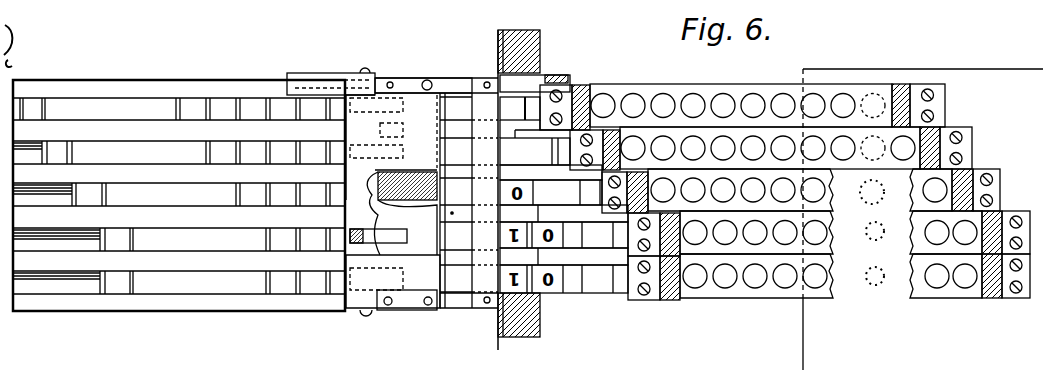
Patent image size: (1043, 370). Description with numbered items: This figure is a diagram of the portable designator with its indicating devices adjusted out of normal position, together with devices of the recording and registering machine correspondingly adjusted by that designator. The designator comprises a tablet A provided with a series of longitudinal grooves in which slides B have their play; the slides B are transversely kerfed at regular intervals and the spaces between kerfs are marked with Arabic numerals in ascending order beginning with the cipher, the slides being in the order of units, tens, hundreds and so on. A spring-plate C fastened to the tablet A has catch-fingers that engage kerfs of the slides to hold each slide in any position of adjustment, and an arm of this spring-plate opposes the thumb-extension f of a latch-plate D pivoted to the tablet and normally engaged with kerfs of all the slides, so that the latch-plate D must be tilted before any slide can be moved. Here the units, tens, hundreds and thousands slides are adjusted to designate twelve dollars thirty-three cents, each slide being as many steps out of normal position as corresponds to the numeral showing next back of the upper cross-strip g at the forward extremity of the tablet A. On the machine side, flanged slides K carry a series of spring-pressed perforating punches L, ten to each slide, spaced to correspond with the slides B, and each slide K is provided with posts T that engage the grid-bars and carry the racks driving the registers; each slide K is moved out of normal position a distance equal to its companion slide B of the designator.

The tablet A is at (163, 83).
The slides B is at (161, 114).
The spring-plate C is at (417, 80).
The latch-plate D is at (350, 307).
The stop piece a is at (375, 237).
The thumb-extension f is at (298, 75).
The upper cross-strip g is at (436, 193).
The posts T is at (583, 87).
The flanged slides K is at (832, 90).
The perforating punches L is at (783, 97).